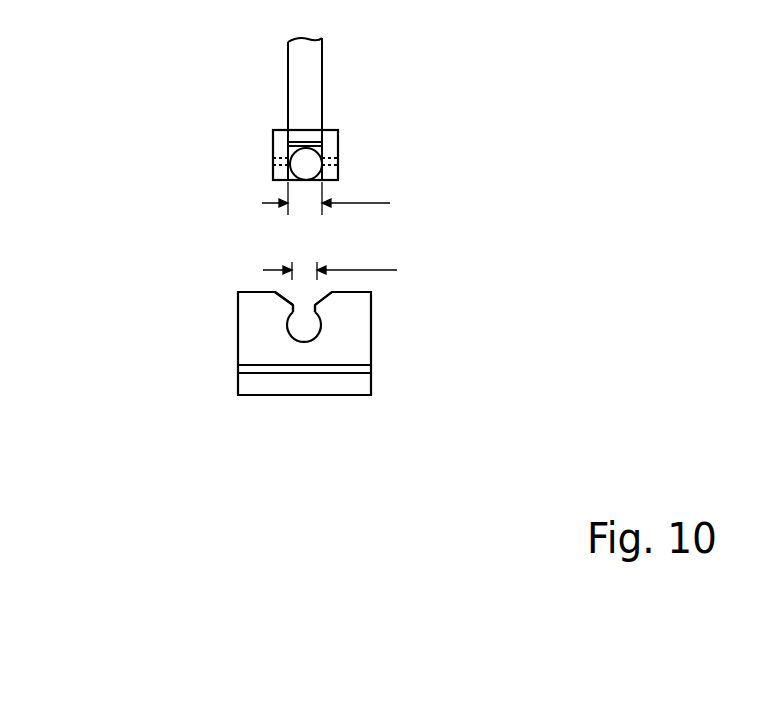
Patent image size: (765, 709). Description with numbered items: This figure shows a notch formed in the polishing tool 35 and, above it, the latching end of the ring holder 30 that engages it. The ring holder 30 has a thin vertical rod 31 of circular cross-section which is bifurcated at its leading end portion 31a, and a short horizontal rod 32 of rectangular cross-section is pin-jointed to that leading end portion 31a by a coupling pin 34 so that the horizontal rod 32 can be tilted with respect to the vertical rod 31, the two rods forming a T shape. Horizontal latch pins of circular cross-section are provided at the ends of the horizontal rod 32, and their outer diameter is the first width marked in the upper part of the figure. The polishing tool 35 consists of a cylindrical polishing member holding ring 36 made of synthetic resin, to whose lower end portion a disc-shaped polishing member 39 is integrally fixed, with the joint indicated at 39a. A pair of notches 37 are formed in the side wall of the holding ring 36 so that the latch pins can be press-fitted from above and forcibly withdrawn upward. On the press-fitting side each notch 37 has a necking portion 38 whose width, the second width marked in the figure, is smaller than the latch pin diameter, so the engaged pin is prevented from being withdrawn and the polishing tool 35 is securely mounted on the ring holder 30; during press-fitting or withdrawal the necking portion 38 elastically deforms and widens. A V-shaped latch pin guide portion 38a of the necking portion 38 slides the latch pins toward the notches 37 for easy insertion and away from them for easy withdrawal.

The ring holder 30 is at (102, 48).
The vertical rod 31 is at (293, 73).
The leading end portion of the vertical rod 31a is at (273, 142).
The horizontal rod 32 is at (300, 168).
The coupling pin 34 is at (337, 153).
The polishing tool 35 is at (139, 302).
The polishing member holding ring 36 is at (238, 322).
The notch 37 is at (300, 310).
The necking portion 38 is at (302, 332).
The latch pin guide portion 38a is at (283, 290).
The polishing member 39 is at (238, 385).
The joint surface 39a is at (238, 365).